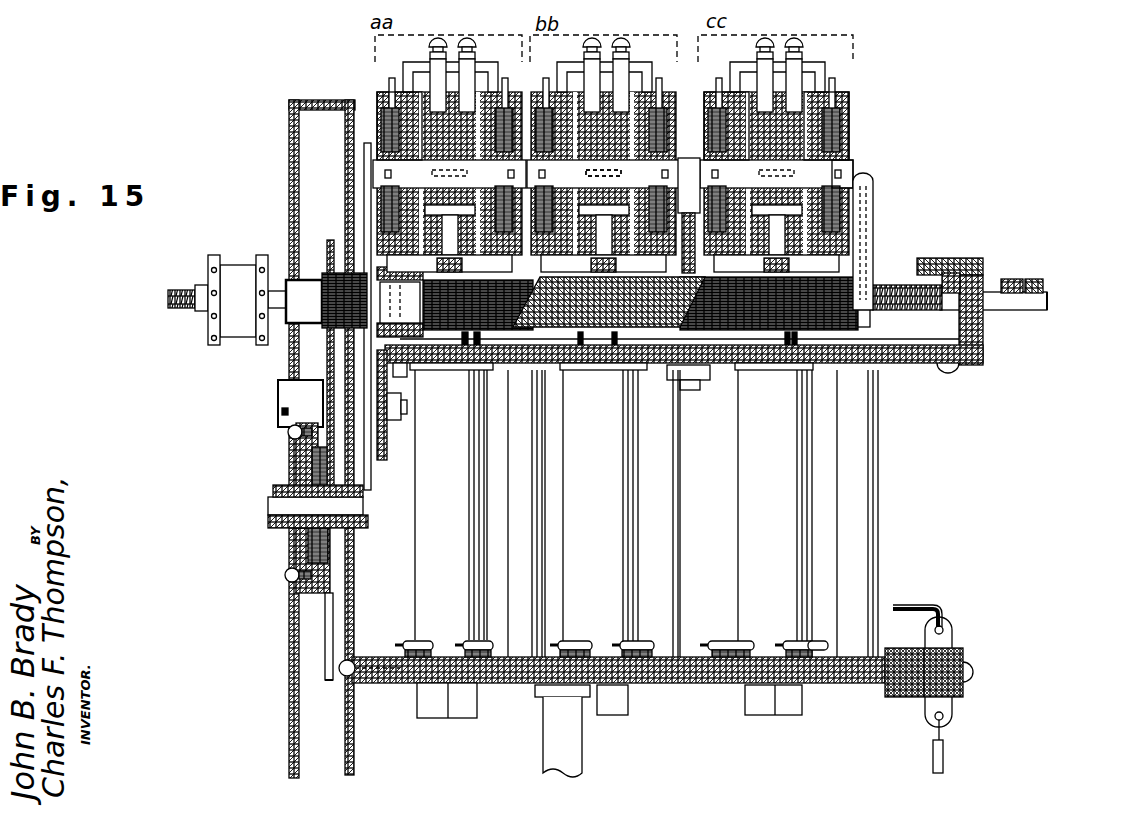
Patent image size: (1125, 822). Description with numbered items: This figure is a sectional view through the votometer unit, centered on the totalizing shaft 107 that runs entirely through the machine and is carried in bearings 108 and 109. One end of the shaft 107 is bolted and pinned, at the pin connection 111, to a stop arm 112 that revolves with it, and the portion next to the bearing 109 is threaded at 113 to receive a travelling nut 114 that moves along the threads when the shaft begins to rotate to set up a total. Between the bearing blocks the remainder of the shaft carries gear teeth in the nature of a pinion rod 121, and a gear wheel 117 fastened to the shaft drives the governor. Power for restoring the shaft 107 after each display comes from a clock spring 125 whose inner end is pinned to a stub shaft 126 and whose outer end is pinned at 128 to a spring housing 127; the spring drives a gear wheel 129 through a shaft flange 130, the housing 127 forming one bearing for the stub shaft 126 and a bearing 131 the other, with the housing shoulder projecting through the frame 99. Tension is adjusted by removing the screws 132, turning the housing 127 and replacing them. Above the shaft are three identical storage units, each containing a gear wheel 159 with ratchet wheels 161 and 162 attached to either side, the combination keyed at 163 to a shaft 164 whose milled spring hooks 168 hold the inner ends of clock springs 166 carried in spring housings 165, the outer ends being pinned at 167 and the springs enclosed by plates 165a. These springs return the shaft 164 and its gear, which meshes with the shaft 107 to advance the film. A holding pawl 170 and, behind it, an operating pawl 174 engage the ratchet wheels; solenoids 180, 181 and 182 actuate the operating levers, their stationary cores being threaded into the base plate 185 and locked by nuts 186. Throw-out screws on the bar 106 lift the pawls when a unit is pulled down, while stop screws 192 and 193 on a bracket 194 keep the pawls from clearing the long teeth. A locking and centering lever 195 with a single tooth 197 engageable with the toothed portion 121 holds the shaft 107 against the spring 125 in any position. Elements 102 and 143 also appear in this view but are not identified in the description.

The frame 99 is at (345, 703).
The flanged coupling 102 is at (238, 268).
The bar 106 is at (868, 186).
The totalizing shaft 107 is at (168, 299).
The bearing 108 is at (370, 258).
The bearing 109 is at (1015, 278).
The pin connection 111 is at (1037, 278).
The stop arm 112 is at (1048, 297).
The threaded portion 113 is at (987, 278).
The travelling nut 114 is at (897, 277).
The gear wheel 117 is at (366, 144).
The pinion rod teeth 121 is at (848, 270).
The clock spring 125 is at (296, 461).
The stub shaft 126 is at (318, 521).
The spring housing 127 is at (273, 489).
The pin 128 is at (278, 406).
The gear wheel 129 is at (327, 643).
The shaft flange 130 is at (352, 553).
The bearing 131 is at (385, 465).
The screws 132 is at (288, 432).
The base plate 143 is at (985, 363).
The gear wheel 159 is at (853, 90).
The ratchet wheel 161 is at (832, 122).
The ratchet wheel 162 is at (852, 106).
The key 163 is at (357, 194).
The storage unit shaft 164 is at (832, 163).
The spring housing 165 is at (731, 91).
The plate 165a is at (596, 290).
The clock spring 166 is at (852, 138).
The pin 167 is at (377, 94).
The milled spring hook 168 is at (587, 167).
The holding pawl 170 is at (423, 80).
The operating pawl 174 is at (625, 82).
The solenoid 180 is at (416, 500).
The solenoid 181 is at (640, 540).
The solenoid 182 is at (743, 470).
The base plate 185 is at (668, 684).
The nut 186 is at (467, 710).
The stop screw 192 is at (430, 46).
The stop screw 193 is at (468, 40).
The bracket 194 is at (497, 76).
The locking and centering lever 195 is at (697, 215).
The single tooth 197 is at (613, 372).